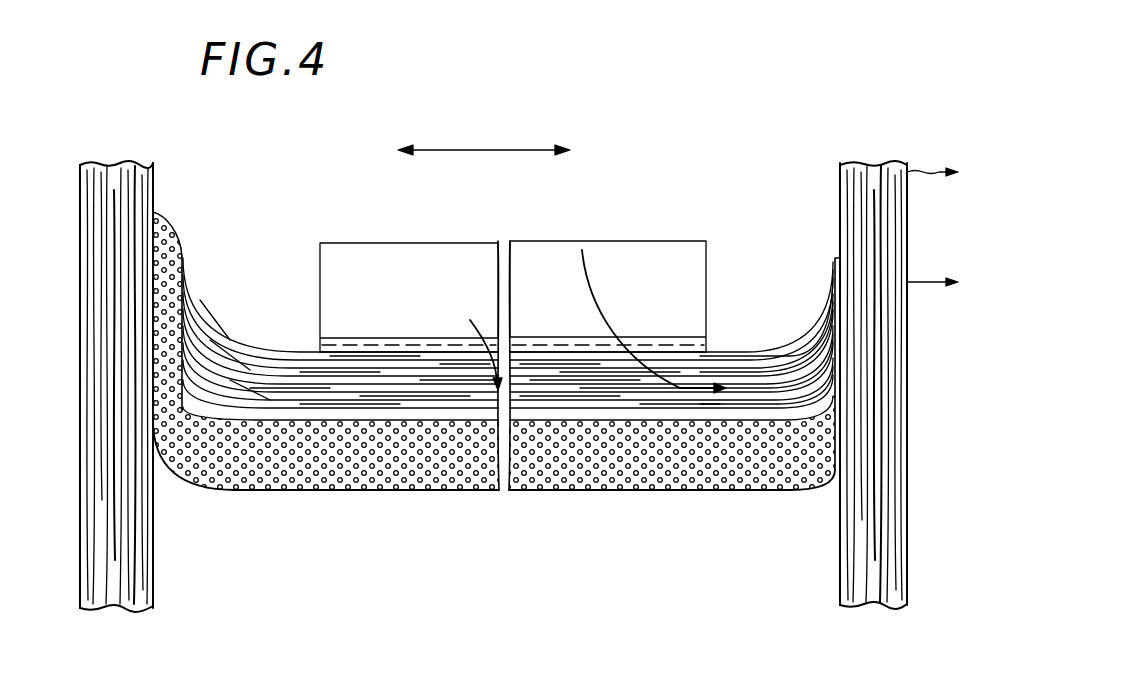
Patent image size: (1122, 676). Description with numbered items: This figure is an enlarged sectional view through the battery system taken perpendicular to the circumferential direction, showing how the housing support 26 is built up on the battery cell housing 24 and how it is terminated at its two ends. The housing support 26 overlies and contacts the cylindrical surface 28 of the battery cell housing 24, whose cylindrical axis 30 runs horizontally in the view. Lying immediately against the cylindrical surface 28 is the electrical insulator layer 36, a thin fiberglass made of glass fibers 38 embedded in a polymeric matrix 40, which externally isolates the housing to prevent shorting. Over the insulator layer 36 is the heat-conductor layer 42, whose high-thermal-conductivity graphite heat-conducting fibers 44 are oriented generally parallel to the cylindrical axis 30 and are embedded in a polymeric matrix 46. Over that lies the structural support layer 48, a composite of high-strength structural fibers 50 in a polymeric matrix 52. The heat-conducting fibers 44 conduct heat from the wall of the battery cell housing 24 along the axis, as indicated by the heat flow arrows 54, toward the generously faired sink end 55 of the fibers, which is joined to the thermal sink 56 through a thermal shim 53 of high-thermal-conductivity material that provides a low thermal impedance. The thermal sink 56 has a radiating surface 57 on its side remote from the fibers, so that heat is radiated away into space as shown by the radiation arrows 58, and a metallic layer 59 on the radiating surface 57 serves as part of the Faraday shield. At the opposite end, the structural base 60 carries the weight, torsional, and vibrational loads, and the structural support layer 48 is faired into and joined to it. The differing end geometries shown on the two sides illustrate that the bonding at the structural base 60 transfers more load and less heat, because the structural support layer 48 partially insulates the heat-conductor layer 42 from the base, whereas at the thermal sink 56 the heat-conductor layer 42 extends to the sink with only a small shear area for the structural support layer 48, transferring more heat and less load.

The battery cell housing 24 is at (366, 243).
The housing support 26 is at (704, 497).
The cylindrical surface 28 is at (656, 337).
The cylindrical axis 30 is at (491, 150).
The electrical insulator layer 36 is at (320, 341).
The glass fibers 38 is at (432, 345).
The polymeric matrix 40 is at (352, 345).
The heat-conductor layer 42 is at (320, 395).
The heat-conducting fibers 44 is at (396, 412).
The polymeric matrix 46 is at (345, 402).
The structural support layer 48 is at (606, 490).
The structural fibers 50 is at (558, 480).
The polymeric matrix 52 is at (480, 478).
The thermal shim 53 is at (836, 477).
The heat flow arrows 54 is at (617, 304).
The sink end 55 is at (752, 375).
The thermal sink 56 is at (851, 202).
The radiating surface 57 is at (907, 380).
The radiation arrows 58 is at (933, 282).
The metallic layer 59 is at (905, 462).
The structural base 60 is at (135, 561).